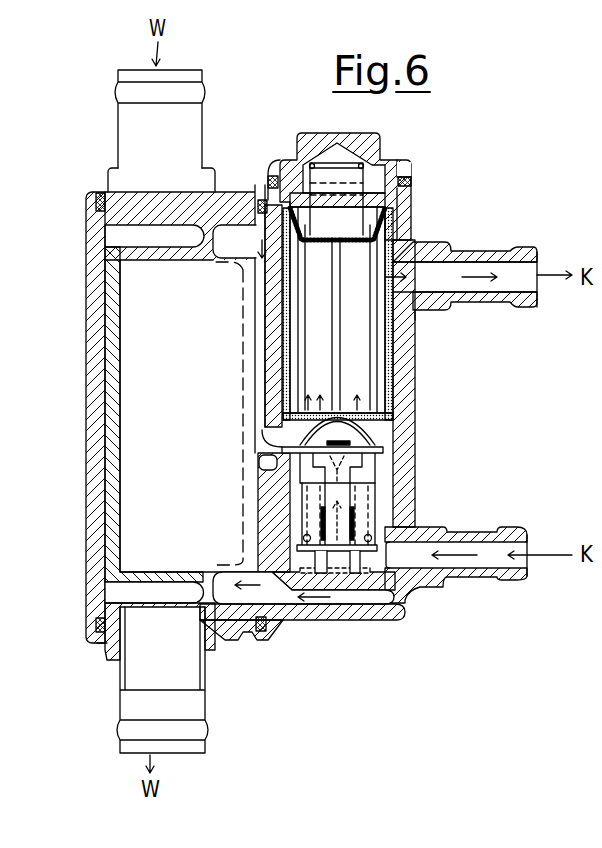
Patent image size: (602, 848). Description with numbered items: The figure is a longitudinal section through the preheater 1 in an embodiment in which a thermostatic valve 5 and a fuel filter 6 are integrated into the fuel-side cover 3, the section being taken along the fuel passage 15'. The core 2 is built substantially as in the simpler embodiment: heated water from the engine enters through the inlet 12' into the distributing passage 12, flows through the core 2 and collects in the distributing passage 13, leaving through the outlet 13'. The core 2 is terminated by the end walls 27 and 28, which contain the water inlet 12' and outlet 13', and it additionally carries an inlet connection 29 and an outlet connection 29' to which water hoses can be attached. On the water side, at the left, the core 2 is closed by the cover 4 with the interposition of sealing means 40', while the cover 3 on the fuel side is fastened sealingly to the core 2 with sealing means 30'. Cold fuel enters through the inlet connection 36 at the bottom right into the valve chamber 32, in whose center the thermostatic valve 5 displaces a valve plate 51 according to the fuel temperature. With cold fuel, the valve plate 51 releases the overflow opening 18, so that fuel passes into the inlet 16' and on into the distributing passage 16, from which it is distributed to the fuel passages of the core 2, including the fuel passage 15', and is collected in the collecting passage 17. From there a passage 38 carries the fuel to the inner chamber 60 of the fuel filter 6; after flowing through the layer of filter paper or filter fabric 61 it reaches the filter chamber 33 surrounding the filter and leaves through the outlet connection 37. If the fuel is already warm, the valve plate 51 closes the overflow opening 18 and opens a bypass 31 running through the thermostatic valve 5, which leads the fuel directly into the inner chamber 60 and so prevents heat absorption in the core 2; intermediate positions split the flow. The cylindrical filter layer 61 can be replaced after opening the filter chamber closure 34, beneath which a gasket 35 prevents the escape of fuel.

The preheater 1 is at (247, 101).
The core 2 is at (107, 490).
The cover 3 is at (451, 411).
The cover 4 is at (93, 353).
The thermostatic valve 5 is at (353, 500).
The fuel filter 6 is at (399, 327).
The distributing passage 12 is at (121, 233).
The inlet 12' is at (146, 152).
The distributing passage 13 is at (122, 592).
The outlet 13' is at (127, 646).
The fuel passage 15' is at (189, 415).
The distributing passage 16 is at (303, 622).
The inlet 16' is at (311, 633).
The collecting passage 17 is at (227, 245).
The overflow opening 18 is at (343, 582).
The end wall 27 is at (187, 217).
The end wall 28 is at (220, 608).
The inlet connection 29 is at (164, 100).
The outlet connection 29' is at (192, 691).
The sealing means 30' is at (274, 416).
The bypass 31 is at (338, 493).
The valve chamber 32 is at (377, 467).
The filter chamber 33 is at (387, 343).
The filter chamber closure 34 is at (383, 167).
The gasket 35 is at (273, 167).
The inlet connection 36 is at (483, 572).
The outlet connection 37 is at (473, 255).
The passage 38 is at (263, 318).
The sealing means 40' is at (71, 400).
The valve plate 51 is at (383, 557).
The inner chamber 60 is at (360, 362).
The filter paper or filter fabric layer 61 is at (285, 367).